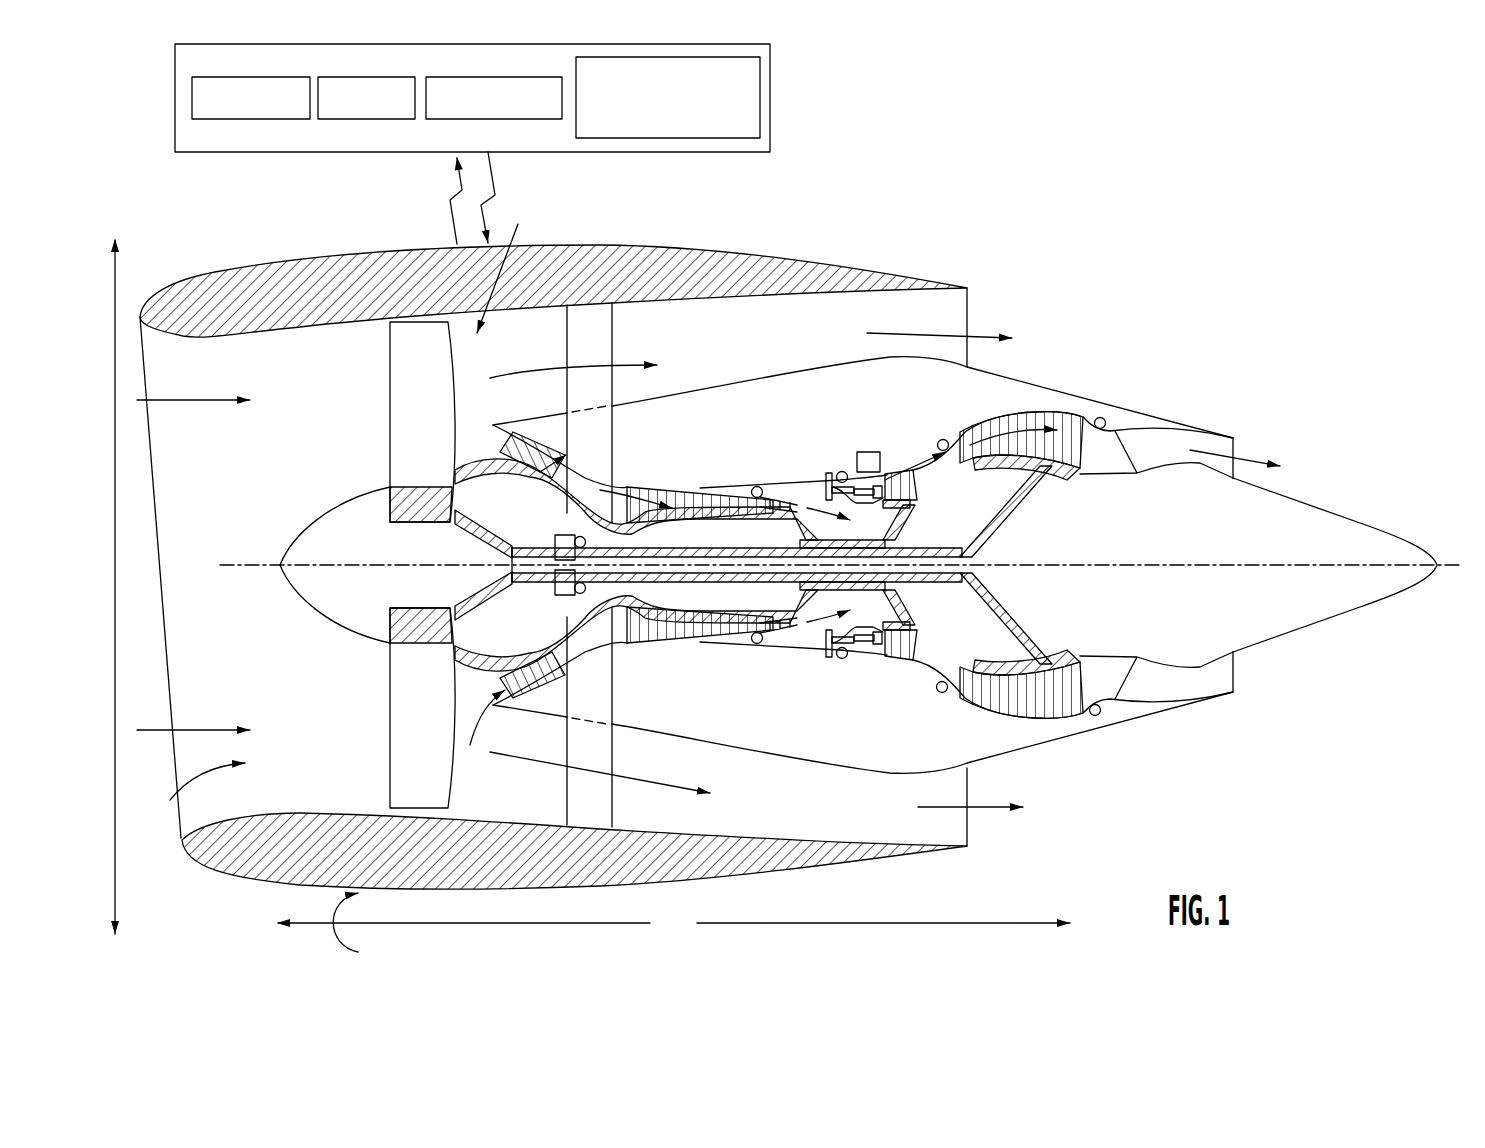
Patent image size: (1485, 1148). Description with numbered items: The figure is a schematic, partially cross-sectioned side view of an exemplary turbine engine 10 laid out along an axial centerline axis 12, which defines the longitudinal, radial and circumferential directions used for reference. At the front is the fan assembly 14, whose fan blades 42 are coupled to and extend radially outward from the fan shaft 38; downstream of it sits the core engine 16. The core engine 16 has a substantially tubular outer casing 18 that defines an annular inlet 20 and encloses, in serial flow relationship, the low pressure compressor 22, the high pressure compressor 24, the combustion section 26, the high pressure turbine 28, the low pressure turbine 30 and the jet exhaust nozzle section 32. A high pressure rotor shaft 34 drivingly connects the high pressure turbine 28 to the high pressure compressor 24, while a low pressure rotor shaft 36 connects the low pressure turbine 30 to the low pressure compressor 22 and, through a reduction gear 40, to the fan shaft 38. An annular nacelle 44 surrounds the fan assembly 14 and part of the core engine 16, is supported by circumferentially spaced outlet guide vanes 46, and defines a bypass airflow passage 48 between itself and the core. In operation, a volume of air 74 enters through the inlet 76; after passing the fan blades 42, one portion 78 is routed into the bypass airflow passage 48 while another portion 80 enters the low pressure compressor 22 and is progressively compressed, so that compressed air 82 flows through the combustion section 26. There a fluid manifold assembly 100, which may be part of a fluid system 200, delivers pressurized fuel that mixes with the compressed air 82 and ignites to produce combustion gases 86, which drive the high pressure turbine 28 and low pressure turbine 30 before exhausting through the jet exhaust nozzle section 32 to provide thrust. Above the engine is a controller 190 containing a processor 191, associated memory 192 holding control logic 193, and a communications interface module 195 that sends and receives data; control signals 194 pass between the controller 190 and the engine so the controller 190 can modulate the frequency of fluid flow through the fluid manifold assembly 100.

The turbine engine 10 is at (1140, 232).
The axial centerline axis 12 is at (1142, 565).
The fan assembly 14 is at (510, 262).
The core engine 16 is at (843, 366).
The outer casing 18 is at (787, 757).
The annular inlet 20 is at (485, 734).
The low pressure compressor 22 is at (557, 682).
The high pressure compressor 24 is at (648, 637).
The combustion section 26 is at (852, 642).
The high pressure turbine 28 is at (913, 645).
The low pressure turbine 30 is at (1053, 727).
The jet exhaust nozzle section 32 is at (1138, 694).
The high pressure rotor shaft 34 is at (860, 536).
The low pressure rotor shaft 36 is at (1015, 500).
The fan shaft 38 is at (454, 522).
The reduction gear 40 is at (566, 530).
The fan blades 42 is at (407, 368).
The nacelle 44 is at (346, 249).
The outlet guide vanes 46 is at (593, 350).
The bypass airflow passage 48 is at (755, 350).
The volume of air 74 is at (207, 400).
The inlet 76 is at (189, 793).
The bypass air portion 78 is at (547, 369).
The core air portion 80 is at (477, 444).
The compressed air 82 is at (636, 498).
The combustion gases 86 is at (957, 435).
The fluid manifold assembly 100 is at (841, 471).
The controller 190 is at (226, 157).
The processor 191 is at (192, 96).
The memory 192 is at (355, 120).
The control logic 193 is at (543, 120).
The control signals 194 is at (455, 188).
The communications interface module 195 is at (668, 138).
The fluid system 200 is at (869, 452).